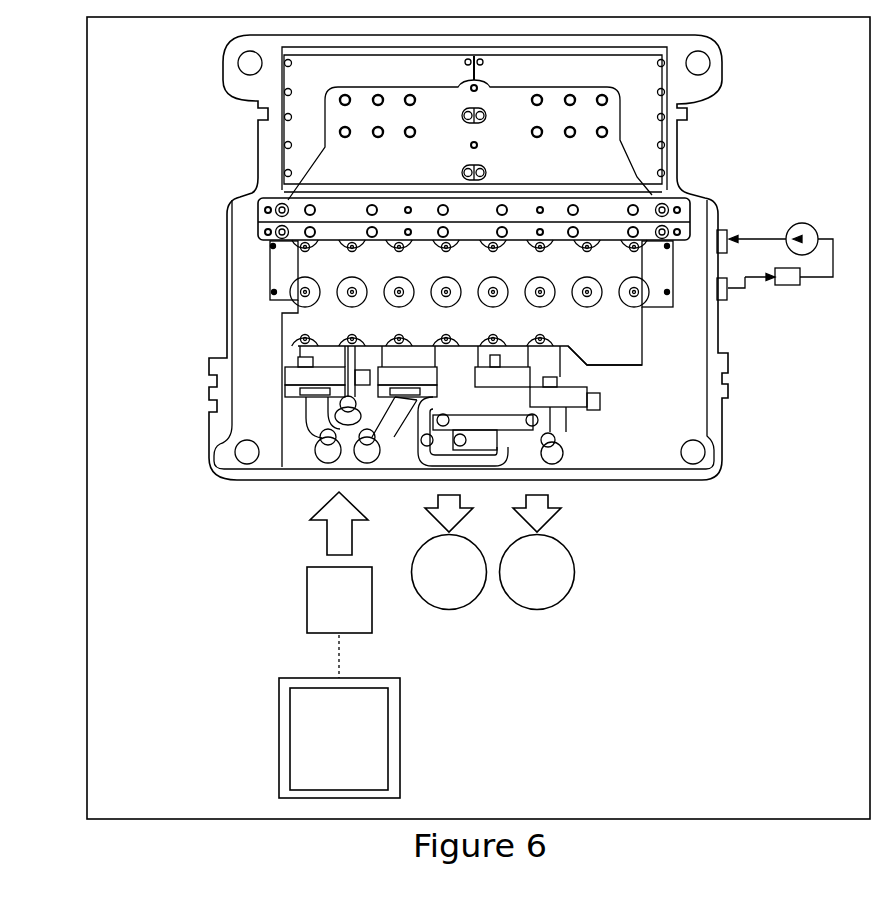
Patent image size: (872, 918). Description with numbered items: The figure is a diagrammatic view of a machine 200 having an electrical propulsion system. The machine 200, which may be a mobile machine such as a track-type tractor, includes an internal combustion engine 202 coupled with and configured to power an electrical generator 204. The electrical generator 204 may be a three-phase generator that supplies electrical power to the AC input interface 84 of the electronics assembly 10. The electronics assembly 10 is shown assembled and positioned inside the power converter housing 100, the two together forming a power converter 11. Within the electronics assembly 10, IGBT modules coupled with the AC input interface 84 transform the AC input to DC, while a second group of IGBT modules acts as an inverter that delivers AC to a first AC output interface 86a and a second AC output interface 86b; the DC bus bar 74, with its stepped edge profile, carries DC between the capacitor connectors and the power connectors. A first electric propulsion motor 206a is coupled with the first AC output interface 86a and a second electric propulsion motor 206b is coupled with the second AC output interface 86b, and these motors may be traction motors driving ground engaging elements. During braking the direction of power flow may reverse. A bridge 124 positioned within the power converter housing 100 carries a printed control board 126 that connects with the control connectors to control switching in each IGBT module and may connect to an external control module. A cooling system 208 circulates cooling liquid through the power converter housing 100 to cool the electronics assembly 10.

The electronics assembly 10 is at (692, 162).
The power converter 11 is at (210, 232).
The DC bus bar 74 is at (326, 156).
The AC input interface 84 is at (306, 453).
The first AC output interface 86a is at (398, 453).
The second AC output interface 86b is at (566, 460).
The power converter housing 100 is at (209, 437).
The bridge 124 is at (650, 301).
The printed control board 126 is at (602, 343).
The machine 200 is at (87, 721).
The internal combustion engine 202 is at (279, 722).
The electrical generator 204 is at (306, 593).
The first electric propulsion motor 206a is at (449, 610).
The second electric propulsion motor 206b is at (537, 610).
The cooling system 208 is at (776, 233).